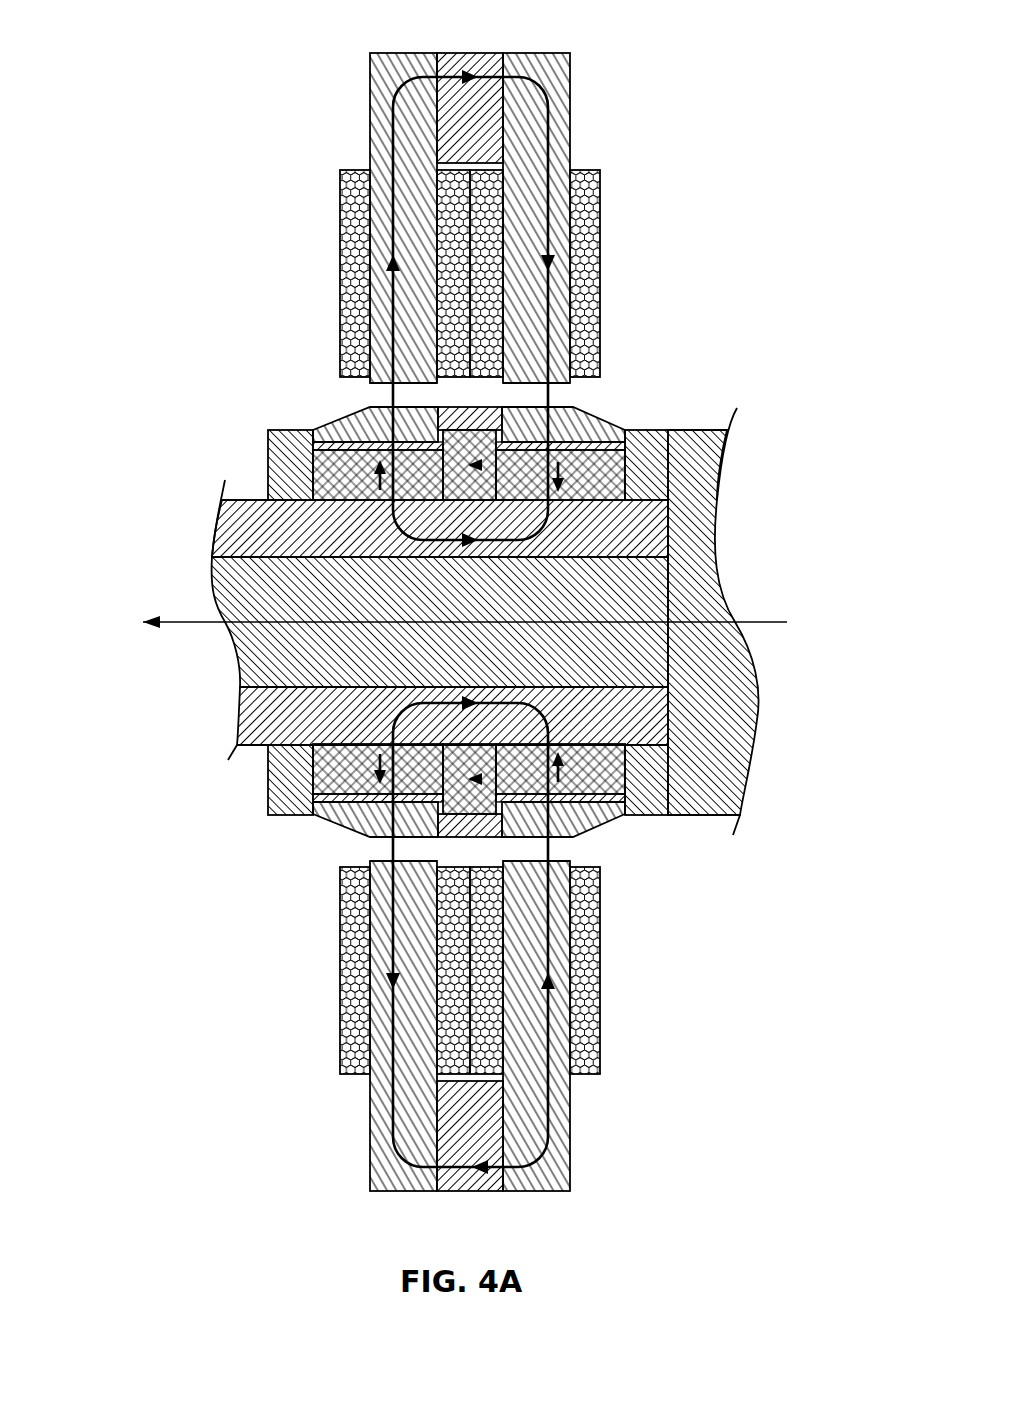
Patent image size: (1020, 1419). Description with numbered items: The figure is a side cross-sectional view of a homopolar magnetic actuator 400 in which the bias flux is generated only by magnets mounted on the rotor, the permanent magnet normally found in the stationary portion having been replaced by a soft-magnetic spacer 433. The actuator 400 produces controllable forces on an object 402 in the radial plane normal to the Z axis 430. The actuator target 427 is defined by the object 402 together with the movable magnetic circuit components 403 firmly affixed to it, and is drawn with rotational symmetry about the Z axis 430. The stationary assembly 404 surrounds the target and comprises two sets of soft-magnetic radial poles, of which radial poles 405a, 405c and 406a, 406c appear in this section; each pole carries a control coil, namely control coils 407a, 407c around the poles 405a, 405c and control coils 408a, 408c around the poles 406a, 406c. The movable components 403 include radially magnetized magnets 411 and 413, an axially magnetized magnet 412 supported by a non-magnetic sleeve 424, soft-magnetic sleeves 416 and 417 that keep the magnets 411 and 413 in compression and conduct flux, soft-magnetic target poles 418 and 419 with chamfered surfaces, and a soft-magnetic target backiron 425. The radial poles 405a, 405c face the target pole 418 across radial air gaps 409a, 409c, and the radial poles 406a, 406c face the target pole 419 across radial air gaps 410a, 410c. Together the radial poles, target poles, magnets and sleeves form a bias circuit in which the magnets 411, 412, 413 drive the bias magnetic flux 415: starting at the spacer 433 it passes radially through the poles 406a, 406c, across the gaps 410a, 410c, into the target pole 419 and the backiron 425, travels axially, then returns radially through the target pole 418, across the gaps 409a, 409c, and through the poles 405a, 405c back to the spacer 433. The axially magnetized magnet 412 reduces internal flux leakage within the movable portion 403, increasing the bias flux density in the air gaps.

The magnetic actuator 400 is at (177, 45).
The object 402 is at (732, 737).
The movable magnetic circuit components 403 is at (168, 452).
The stationary assembly 404 is at (202, 165).
The radial pole 405a is at (403, 147).
The radial pole 406a is at (528, 160).
The control coil 407a is at (360, 236).
The control coil 408a is at (585, 236).
The radial air gap 409a is at (383, 397).
The radial air gap 410a is at (553, 392).
The radial pole 405c is at (403, 1088).
The radial pole 406c is at (528, 1095).
The control coil 407c is at (360, 992).
The control coil 408c is at (585, 992).
The radial air gap 409c is at (405, 845).
The radial air gap 410c is at (528, 845).
The radially magnetized magnet 411 is at (352, 486).
The axially magnetized magnet 412 is at (475, 488).
The radially magnetized magnet 413 is at (588, 490).
The bias magnetic flux 415 is at (550, 108).
The soft-magnetic sleeve 416 is at (335, 466).
The soft-magnetic sleeve 417 is at (585, 461).
The target pole 418 is at (355, 426).
The target pole 419 is at (597, 428).
The sleeve 424 is at (478, 421).
The soft-magnetic target backiron 425 is at (262, 720).
The actuator target 427 is at (155, 533).
The Z axis 430 is at (190, 620).
The soft-magnetic spacer 433 is at (470, 74).